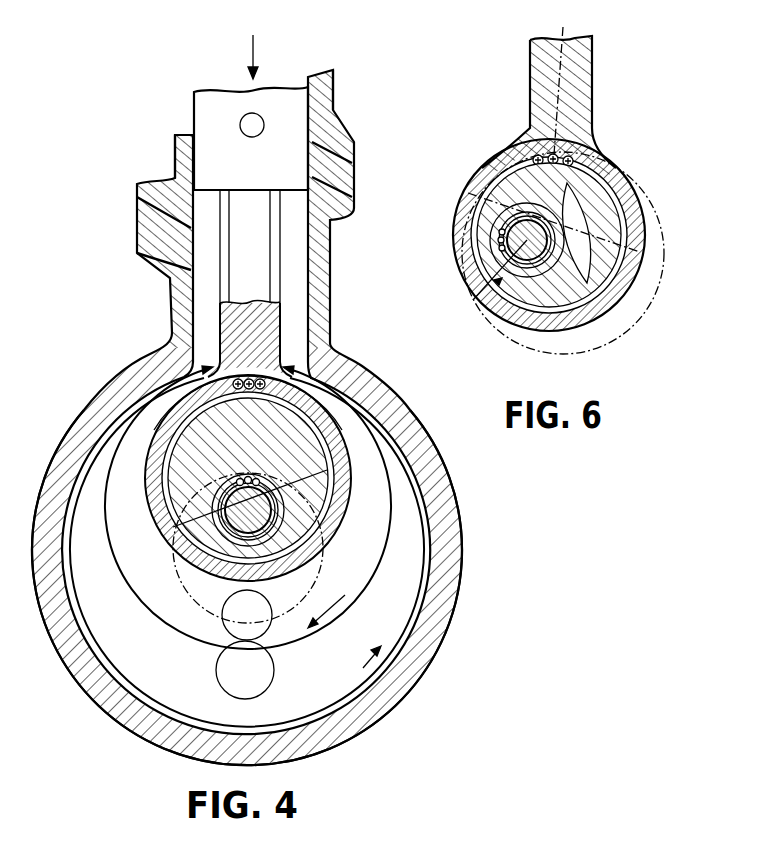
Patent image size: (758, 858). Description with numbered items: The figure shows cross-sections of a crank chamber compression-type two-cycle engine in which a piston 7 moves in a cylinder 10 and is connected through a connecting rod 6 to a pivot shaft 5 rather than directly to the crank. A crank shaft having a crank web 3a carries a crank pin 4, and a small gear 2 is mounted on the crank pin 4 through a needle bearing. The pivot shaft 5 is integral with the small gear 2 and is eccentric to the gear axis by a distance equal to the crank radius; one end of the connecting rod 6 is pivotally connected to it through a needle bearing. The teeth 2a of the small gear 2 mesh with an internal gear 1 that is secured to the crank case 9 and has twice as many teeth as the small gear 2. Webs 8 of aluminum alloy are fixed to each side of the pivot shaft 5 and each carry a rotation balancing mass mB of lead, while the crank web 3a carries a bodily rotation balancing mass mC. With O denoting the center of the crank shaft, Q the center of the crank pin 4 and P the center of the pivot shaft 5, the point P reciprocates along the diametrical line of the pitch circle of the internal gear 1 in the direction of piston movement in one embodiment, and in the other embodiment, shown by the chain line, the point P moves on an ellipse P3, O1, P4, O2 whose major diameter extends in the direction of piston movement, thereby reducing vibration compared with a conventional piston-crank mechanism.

In FIG. 4, the internal gear 1 is at (337, 553).
In FIG. 6, the internal gear 1 is at (635, 342).
In FIG. 6, the small gear 2 is at (530, 330).
In FIG. 4, the teeth of the small gear 2a is at (196, 518).
In FIG. 4, the crank web 3a is at (415, 553).
In FIG. 4, the crank pin 4 is at (273, 548).
In FIG. 6, the crank pin 4 is at (478, 252).
In FIG. 4, the pivot shaft 5 is at (320, 478).
In FIG. 6, the pivot shaft 5 is at (603, 205).
In FIG. 4, the connecting rod 6 is at (263, 260).
In FIG. 6, the connecting rod 6 is at (585, 75).
In FIG. 4, the piston 7 is at (285, 97).
In FIG. 4, the web 8 is at (128, 435).
In FIG. 4, the crank case 9 is at (447, 610).
In FIG. 4, the cylinder 10 is at (322, 102).
In FIG. 4, the center of the crank shaft O is at (230, 556).
In FIG. 6, the point on the ellipse O1 is at (502, 318).
In FIG. 6, the point on the ellipse O2 is at (615, 292).
In FIG. 4, the center of the pivot shaft P is at (256, 483).
In FIG. 6, the center of the pivot shaft P is at (548, 232).
In FIG. 6, the end point of the ellipse major diameter P3 is at (575, 162).
In FIG. 6, the end point of the ellipse major diameter P4 is at (568, 332).
In FIG. 4, the center of the crank pin Q is at (240, 500).
In FIG. 6, the center of the crank pin Q is at (473, 300).
In FIG. 4, the rotation balancing mass mB is at (231, 622).
In FIG. 4, the bodily rotation balancing mass mC is at (228, 676).